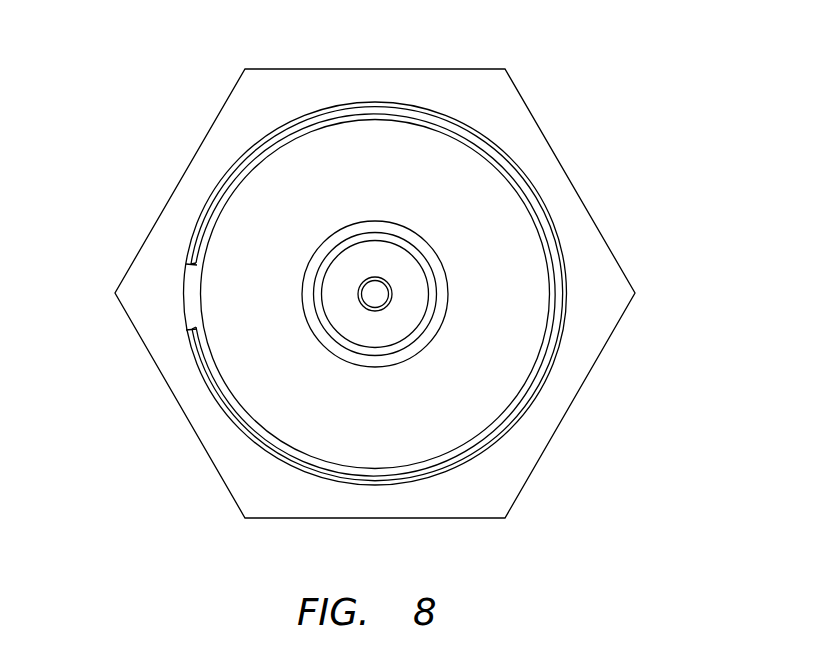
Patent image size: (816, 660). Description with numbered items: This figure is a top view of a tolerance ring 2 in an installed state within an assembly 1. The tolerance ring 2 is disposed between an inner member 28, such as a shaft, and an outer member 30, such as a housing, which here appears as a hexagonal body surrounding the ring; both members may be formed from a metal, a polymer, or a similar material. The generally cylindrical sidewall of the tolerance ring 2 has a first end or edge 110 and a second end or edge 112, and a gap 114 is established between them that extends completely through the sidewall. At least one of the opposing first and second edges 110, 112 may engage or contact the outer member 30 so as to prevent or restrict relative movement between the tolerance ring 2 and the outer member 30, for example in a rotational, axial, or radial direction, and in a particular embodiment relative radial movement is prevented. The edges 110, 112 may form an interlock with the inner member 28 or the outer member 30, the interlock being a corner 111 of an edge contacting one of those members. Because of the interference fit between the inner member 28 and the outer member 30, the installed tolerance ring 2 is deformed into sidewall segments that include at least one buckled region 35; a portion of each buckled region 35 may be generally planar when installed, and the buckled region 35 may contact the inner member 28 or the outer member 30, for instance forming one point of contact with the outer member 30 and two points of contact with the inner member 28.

The assembly 1 is at (690, 75).
The tolerance ring 2 is at (404, 108).
The inner member 28 is at (494, 306).
The outer member 30 is at (587, 306).
The buckled region 35 is at (315, 112).
The first end or edge 110 is at (188, 267).
The corner 111 is at (188, 263).
The second end or edge 112 is at (190, 331).
The gap 114 is at (183, 298).